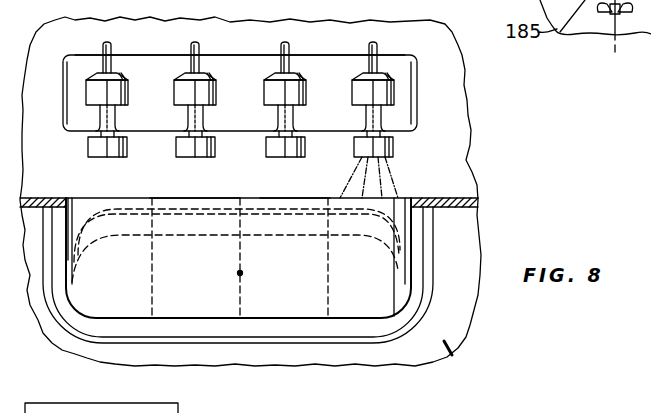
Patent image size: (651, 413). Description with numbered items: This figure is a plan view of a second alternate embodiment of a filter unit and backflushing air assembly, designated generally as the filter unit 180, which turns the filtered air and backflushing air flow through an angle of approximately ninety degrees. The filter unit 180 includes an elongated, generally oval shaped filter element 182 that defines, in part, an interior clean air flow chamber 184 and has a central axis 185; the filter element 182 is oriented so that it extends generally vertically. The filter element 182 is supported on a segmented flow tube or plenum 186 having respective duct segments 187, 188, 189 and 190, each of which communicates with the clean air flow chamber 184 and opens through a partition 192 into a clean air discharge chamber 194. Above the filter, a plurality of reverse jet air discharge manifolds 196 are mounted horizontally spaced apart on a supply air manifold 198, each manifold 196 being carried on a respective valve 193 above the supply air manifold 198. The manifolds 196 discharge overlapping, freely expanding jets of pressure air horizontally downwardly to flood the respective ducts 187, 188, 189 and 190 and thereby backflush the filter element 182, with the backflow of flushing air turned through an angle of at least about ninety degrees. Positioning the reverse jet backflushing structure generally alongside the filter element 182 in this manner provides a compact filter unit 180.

The filter unit 180 is at (450, 348).
The filter element 182 is at (374, 345).
The interior clean air flow chamber 184 is at (194, 290).
The central axis 185 is at (242, 273).
The segmented flow tube or plenum 186 is at (300, 320).
The duct segment 187 is at (123, 198).
The duct segment 188 is at (212, 198).
The duct segment 189 is at (304, 198).
The duct segment 190 is at (390, 192).
The partition 192 is at (478, 167).
The valve 193 is at (90, 90).
The clean air discharge chamber 194 is at (250, 49).
The reverse jet air discharge manifold 196 is at (127, 147).
The supply air manifold 198 is at (395, 55).